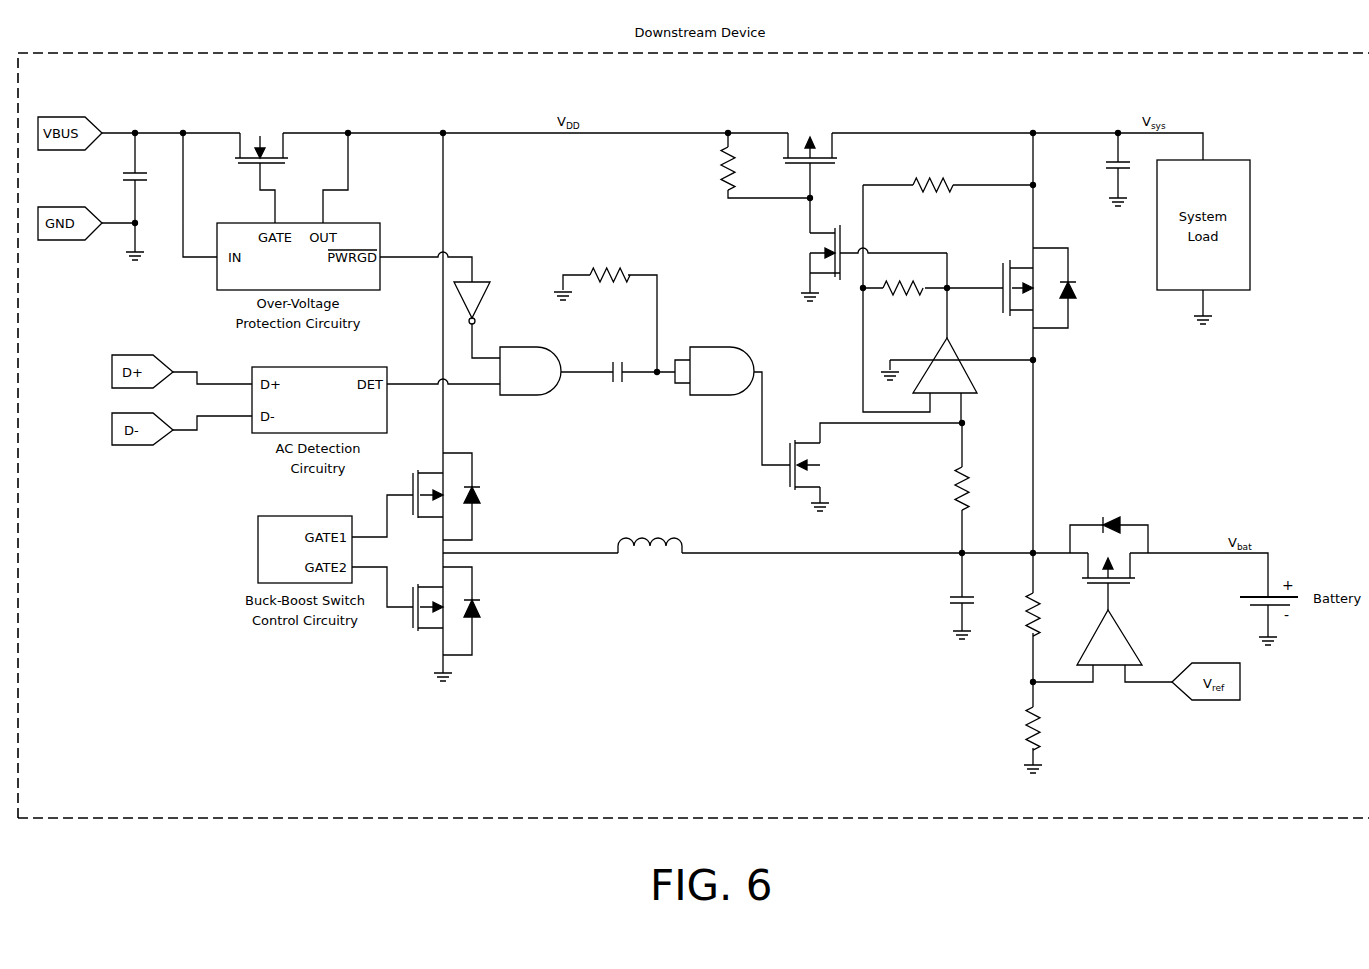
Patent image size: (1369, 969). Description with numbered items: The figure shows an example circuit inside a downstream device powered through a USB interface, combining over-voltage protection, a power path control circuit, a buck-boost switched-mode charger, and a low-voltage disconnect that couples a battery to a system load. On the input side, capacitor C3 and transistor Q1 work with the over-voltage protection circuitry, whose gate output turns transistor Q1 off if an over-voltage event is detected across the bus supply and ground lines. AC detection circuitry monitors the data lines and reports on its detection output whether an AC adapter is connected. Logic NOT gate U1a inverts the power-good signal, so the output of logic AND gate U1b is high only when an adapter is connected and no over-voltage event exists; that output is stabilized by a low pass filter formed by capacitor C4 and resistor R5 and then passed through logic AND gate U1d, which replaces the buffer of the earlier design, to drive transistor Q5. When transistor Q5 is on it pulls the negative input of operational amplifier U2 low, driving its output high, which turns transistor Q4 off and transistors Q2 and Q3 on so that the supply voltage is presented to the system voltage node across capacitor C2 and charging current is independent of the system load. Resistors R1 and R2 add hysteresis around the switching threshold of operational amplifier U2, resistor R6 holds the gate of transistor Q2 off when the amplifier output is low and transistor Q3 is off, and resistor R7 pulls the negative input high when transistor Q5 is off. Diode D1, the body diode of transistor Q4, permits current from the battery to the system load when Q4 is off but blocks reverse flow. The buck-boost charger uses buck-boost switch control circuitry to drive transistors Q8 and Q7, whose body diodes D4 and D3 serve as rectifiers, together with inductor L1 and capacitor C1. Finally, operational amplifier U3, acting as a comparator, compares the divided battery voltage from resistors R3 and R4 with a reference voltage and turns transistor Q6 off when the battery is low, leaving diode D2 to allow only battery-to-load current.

The transistor Q1 is at (261, 167).
The transistor Q2 is at (810, 172).
The transistor Q3 is at (866, 263).
The transistor Q4 is at (1018, 277).
The transistor Q5 is at (876, 467).
The transistor Q6 is at (1124, 568).
The transistor Q7 is at (397, 599).
The transistor Q8 is at (397, 503).
The resistor R1 is at (948, 171).
The resistor R2 is at (933, 301).
The resistor R3 is at (1020, 617).
The resistor R4 is at (1021, 727).
The resistor R5 is at (605, 308).
The resistor R6 is at (753, 165).
The resistor R7 is at (947, 510).
The capacitor C1 is at (949, 616).
The capacitor C2 is at (1105, 169).
The capacitor C3 is at (119, 196).
The capacitor C4 is at (631, 357).
The diode D1 is at (1067, 288).
The diode D2 is at (1109, 527).
The diode D3 is at (473, 611).
The diode D4 is at (473, 496).
The inductor L1 is at (650, 536).
The logic NOT gate U1a is at (481, 320).
The logic AND gate U1b is at (556, 362).
The logic AND gate U1d is at (723, 397).
The operational amplifier U2 is at (957, 380).
The operational amplifier U3 is at (1102, 632).